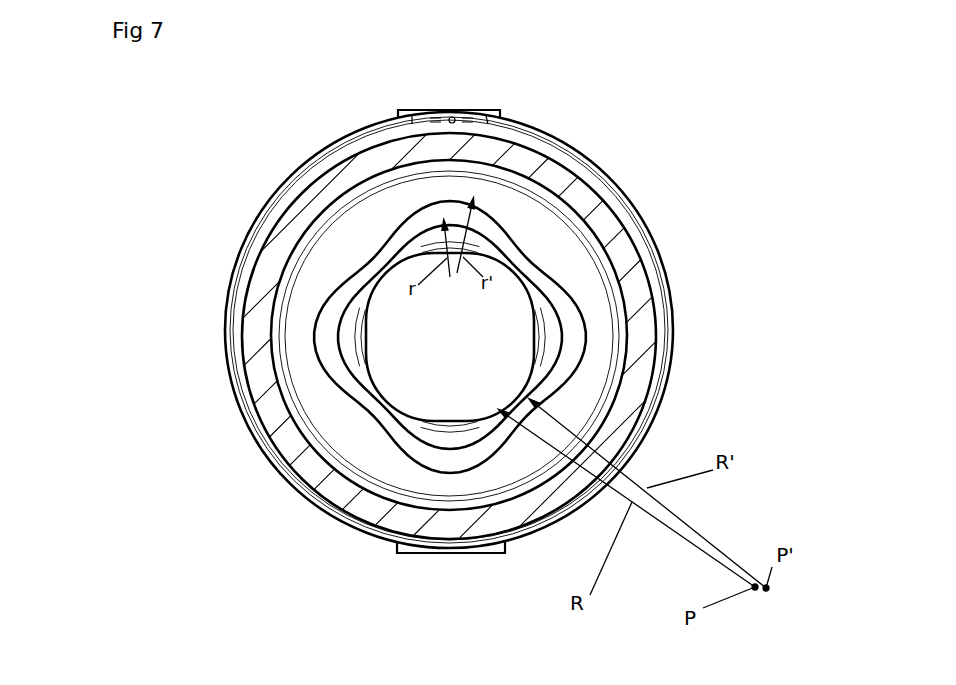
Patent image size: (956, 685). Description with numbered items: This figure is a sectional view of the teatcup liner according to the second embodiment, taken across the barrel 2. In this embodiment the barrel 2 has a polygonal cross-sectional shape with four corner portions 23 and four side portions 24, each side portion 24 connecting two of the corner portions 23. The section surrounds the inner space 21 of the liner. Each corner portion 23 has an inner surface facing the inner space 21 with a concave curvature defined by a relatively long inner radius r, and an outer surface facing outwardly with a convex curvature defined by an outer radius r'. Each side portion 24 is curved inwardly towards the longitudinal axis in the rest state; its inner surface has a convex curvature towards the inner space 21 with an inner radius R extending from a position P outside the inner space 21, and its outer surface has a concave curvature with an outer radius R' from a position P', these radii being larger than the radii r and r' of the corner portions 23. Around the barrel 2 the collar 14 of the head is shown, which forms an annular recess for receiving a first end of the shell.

The collar 14 is at (353, 153).
The barrel 2 is at (523, 263).
The corner portions 23 is at (435, 228).
The side portions 24 is at (517, 253).
The inner space 21 is at (458, 339).